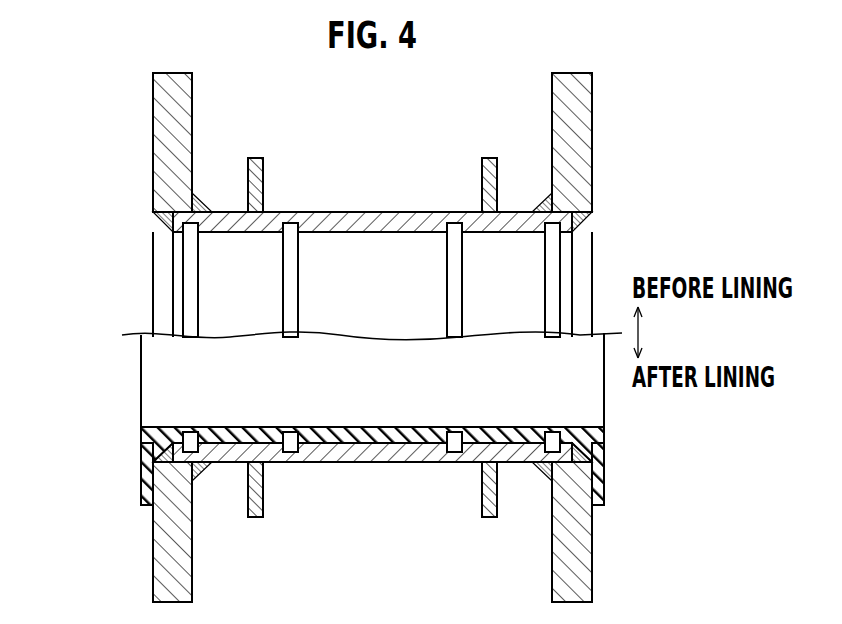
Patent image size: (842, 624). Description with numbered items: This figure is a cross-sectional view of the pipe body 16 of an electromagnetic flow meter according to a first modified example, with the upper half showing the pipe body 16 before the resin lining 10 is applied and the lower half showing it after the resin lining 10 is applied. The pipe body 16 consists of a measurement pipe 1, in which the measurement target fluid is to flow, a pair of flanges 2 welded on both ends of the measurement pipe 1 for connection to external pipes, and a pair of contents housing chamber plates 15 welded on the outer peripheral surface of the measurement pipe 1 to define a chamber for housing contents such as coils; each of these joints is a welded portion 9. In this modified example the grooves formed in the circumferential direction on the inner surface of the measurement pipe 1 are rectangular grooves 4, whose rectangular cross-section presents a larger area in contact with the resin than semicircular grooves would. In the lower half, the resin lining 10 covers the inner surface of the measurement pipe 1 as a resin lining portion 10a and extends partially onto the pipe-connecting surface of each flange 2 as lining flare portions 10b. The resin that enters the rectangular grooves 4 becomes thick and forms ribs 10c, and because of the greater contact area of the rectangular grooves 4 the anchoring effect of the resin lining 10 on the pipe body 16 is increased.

The measurement pipe 1 is at (376, 212).
The flanges 2 is at (153, 133).
The rectangular grooves 4 is at (290, 212).
The welded portion 9 is at (198, 205).
The resin lining 10 is at (117, 378).
The resin lining portion 10a is at (370, 427).
The lining flare portions 10b is at (141, 470).
The ribs 10c is at (190, 428).
The contents housing chamber plates 15 is at (255, 158).
The pipe body 16 is at (336, 147).